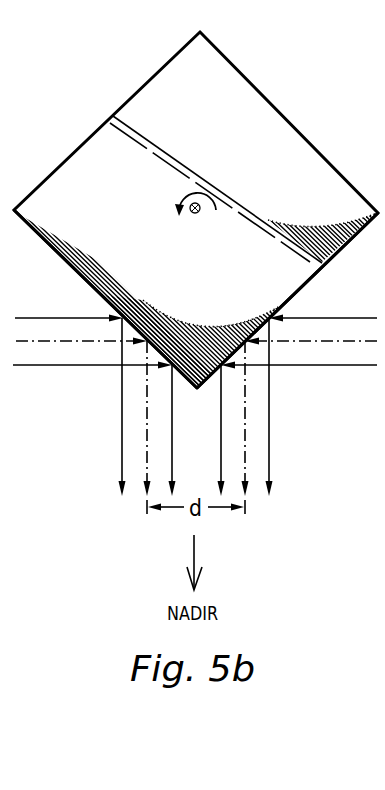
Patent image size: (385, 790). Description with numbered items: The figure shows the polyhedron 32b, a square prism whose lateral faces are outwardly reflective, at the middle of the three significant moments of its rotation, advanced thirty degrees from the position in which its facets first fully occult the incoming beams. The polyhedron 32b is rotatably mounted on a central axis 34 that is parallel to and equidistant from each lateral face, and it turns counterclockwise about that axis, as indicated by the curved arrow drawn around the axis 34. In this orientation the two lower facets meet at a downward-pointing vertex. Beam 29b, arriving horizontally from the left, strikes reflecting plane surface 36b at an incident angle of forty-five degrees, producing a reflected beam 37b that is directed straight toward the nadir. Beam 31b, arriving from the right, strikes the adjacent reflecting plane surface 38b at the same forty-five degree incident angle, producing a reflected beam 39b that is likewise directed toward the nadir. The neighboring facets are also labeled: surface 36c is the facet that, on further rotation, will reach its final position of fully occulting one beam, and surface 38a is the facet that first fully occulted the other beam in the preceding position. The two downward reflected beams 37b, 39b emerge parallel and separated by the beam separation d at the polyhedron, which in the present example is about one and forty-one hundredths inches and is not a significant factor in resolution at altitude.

The polyhedron 32b is at (253, 93).
The central axis 34 is at (195, 222).
The reflecting plane surface 36b is at (70, 268).
The reflecting plane surface 36c is at (229, 300).
The reflecting plane surface 38a is at (0, 303).
The reflecting plane surface 38b is at (319, 268).
The beam 29b is at (40, 342).
The beam 31b is at (337, 342).
The reflected beam 37b is at (146, 427).
The reflected beam 39b is at (245, 432).